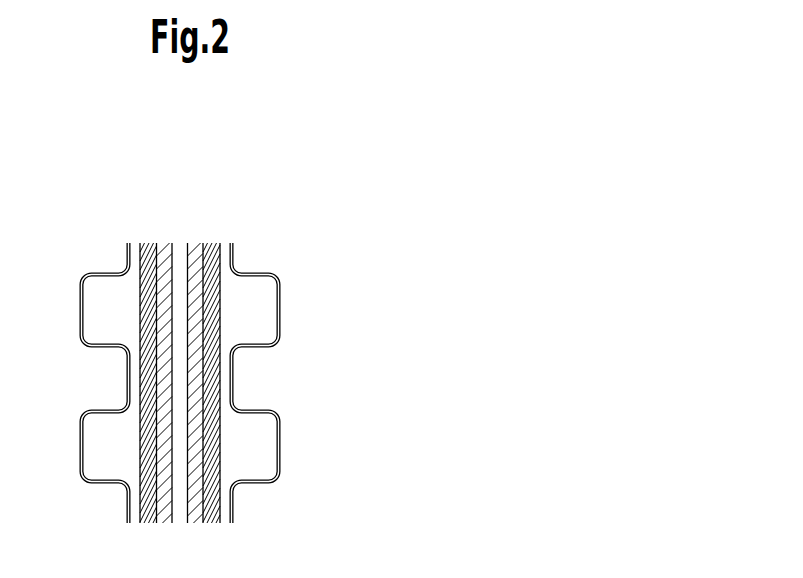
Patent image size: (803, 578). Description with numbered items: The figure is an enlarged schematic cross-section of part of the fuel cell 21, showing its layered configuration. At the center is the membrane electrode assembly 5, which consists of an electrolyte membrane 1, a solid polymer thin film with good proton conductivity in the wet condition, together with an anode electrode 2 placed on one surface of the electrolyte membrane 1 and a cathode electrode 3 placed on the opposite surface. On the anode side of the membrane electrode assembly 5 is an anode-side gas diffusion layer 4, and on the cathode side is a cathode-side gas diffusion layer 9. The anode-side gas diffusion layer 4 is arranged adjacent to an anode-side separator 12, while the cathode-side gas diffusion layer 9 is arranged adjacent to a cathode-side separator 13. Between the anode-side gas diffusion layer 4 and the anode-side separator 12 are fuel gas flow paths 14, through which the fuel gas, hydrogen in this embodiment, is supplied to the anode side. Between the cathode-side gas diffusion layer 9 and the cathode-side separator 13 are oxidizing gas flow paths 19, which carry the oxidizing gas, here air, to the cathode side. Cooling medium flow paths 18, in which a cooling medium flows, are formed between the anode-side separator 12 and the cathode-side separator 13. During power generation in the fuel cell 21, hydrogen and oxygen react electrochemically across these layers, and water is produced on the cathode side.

The electrolyte membrane 1 is at (183, 242).
The anode electrode 2 is at (168, 242).
The cathode electrode 3 is at (198, 242).
The anode-side gas diffusion layer 4 is at (150, 242).
The membrane electrode assembly 5 is at (153, 187).
The cathode-side gas diffusion layer 9 is at (212, 242).
The anode-side separator 12 is at (132, 509).
The cathode-side separator 13 is at (228, 509).
The fuel gas flow paths 14 is at (117, 313).
The cooling medium flow paths 18 is at (117, 386).
The oxidizing gas flow paths 19 is at (243, 313).
The fuel cell 21 is at (420, 153).